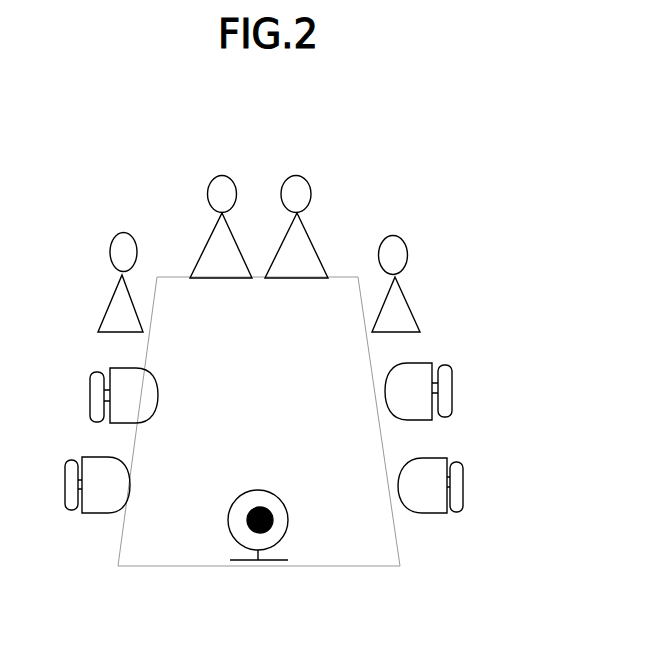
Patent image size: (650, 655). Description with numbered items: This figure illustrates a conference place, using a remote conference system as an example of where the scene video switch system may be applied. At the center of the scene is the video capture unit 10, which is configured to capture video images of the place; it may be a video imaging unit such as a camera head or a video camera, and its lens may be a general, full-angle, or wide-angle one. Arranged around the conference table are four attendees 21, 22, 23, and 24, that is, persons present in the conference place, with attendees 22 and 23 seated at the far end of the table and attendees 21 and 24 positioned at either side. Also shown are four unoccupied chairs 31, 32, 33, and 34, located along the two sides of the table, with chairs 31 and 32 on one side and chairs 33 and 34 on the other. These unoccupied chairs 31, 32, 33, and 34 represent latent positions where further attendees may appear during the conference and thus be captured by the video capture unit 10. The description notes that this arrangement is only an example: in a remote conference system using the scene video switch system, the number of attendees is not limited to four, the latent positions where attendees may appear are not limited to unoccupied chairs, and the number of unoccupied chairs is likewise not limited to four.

The video capture unit 10 is at (288, 518).
The attendee 21 is at (110, 250).
The attendee 22 is at (221, 175).
The attendee 23 is at (296, 175).
The attendee 24 is at (408, 254).
The unoccupied chair 31 is at (65, 483).
The unoccupied chair 32 is at (90, 397).
The unoccupied chair 33 is at (452, 385).
The unoccupied chair 34 is at (463, 477).